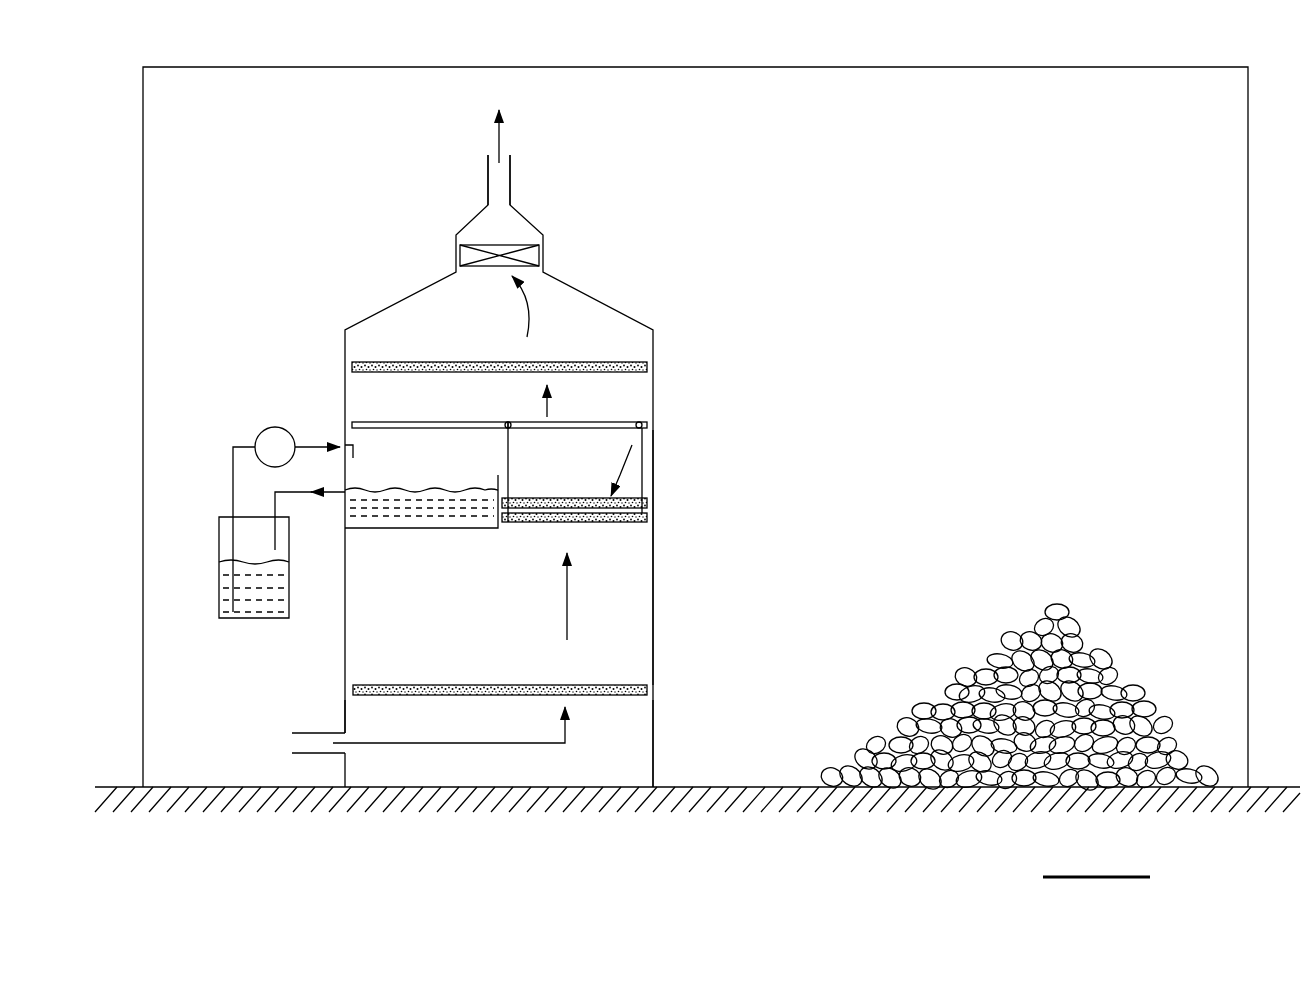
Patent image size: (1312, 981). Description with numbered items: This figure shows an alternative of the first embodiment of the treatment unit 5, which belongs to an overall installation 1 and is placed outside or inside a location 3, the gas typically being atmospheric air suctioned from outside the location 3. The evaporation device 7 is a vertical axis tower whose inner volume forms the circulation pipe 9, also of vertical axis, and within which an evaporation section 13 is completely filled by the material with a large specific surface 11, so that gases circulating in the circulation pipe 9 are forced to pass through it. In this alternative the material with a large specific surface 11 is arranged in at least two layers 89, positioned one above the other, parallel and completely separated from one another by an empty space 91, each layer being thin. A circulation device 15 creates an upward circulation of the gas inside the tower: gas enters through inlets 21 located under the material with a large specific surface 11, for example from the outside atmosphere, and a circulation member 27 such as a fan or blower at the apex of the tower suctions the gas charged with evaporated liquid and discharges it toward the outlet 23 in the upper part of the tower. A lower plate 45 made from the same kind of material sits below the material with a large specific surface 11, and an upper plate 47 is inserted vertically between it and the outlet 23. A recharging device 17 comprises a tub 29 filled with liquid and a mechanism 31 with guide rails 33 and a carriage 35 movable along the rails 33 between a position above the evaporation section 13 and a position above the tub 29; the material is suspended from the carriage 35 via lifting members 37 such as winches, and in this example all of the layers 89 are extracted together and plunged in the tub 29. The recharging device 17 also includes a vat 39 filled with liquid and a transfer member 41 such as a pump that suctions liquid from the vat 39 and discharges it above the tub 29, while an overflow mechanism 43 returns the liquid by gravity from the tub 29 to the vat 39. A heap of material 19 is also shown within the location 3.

The installation 1 is at (277, 217).
The location 3 is at (1258, 205).
The treatment unit 5 is at (312, 325).
The evaporation device 7 is at (657, 320).
The circulation pipe 9 is at (627, 667).
The material with a large specific surface 11 is at (645, 448).
The evaporation section 13 is at (641, 562).
The circulation device 15 is at (573, 243).
The recharging device 17 is at (245, 432).
The heap of material 19 is at (1065, 600).
The inlet 21 is at (328, 743).
The outlet 23 is at (493, 190).
The circulation member 27 is at (468, 250).
The tub 29 is at (385, 530).
The mechanism 31 is at (658, 407).
The guide rails 33 is at (393, 425).
The carriage 35 is at (591, 424).
The lifting members 37 is at (506, 422).
The vat 39 is at (219, 532).
The transfer member 41 is at (272, 427).
The overflow mechanism 43 is at (345, 480).
The lower plate 45 is at (650, 690).
The upper plate 47 is at (652, 367).
The layers 89 is at (628, 522).
The space 91 is at (564, 498).